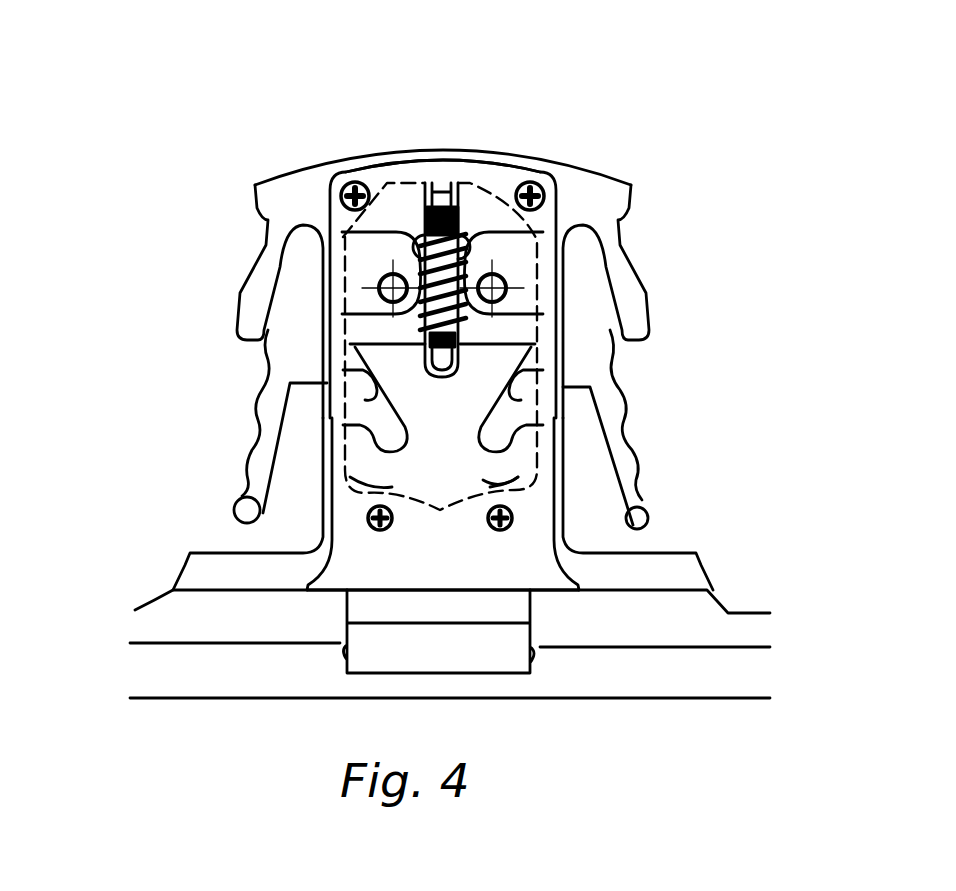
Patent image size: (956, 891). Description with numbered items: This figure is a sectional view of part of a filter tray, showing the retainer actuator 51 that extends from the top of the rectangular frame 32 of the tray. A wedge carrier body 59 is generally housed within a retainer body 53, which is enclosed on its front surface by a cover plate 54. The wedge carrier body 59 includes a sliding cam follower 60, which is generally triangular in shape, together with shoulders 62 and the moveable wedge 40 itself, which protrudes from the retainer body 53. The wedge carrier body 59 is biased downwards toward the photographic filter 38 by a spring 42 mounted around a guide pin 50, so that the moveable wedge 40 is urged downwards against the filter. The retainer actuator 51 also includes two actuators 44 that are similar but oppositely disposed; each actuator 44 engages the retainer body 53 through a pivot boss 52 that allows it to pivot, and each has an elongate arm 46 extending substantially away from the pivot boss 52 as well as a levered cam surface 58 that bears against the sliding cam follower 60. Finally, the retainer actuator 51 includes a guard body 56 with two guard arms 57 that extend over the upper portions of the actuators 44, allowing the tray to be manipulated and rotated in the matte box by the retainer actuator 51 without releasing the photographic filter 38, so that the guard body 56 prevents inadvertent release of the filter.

The rectangular frame 32 is at (697, 628).
The photographic filter 38 is at (238, 682).
The moveable wedge 40 is at (368, 652).
The spring 42 is at (410, 185).
The actuator 44 is at (587, 358).
The elongate arm 46 is at (243, 463).
The guide pin 50 is at (450, 193).
The retainer actuator 51 is at (276, 128).
The pivot boss 52 is at (380, 276).
The retainer body 53 is at (372, 155).
The cover plate 54 is at (500, 567).
The guard body 56 is at (593, 178).
The guard arm 57 is at (246, 313).
The levered cam surface 58 is at (350, 375).
The wedge carrier body 59 is at (443, 346).
The sliding cam follower 60 is at (532, 380).
The shoulder 62 is at (363, 435).